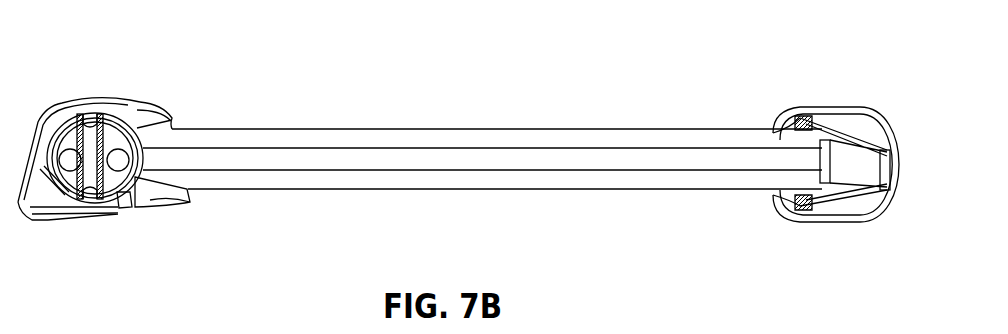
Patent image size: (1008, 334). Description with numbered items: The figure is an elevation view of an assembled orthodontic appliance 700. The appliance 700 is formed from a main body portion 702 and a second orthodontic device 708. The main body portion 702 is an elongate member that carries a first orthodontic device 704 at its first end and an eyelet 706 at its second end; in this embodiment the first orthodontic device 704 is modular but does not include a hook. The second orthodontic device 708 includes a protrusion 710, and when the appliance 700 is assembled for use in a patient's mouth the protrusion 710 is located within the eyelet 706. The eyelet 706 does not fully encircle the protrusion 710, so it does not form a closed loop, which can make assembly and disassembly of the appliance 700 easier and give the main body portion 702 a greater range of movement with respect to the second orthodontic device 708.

The orthodontic appliance 700 is at (768, 80).
The main body portion 702 is at (422, 130).
The first orthodontic device 704 is at (843, 220).
The eyelet 706 is at (74, 102).
The second orthodontic device 708 is at (50, 220).
The protrusion 710 is at (128, 206).